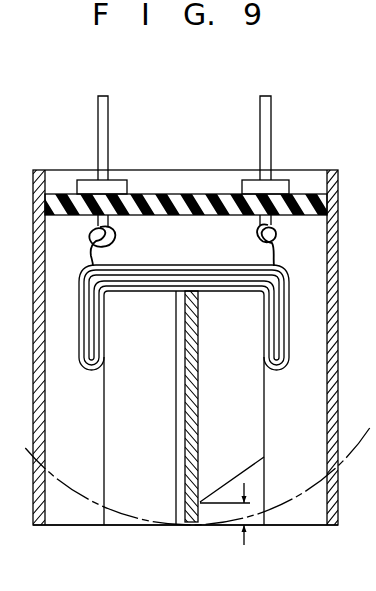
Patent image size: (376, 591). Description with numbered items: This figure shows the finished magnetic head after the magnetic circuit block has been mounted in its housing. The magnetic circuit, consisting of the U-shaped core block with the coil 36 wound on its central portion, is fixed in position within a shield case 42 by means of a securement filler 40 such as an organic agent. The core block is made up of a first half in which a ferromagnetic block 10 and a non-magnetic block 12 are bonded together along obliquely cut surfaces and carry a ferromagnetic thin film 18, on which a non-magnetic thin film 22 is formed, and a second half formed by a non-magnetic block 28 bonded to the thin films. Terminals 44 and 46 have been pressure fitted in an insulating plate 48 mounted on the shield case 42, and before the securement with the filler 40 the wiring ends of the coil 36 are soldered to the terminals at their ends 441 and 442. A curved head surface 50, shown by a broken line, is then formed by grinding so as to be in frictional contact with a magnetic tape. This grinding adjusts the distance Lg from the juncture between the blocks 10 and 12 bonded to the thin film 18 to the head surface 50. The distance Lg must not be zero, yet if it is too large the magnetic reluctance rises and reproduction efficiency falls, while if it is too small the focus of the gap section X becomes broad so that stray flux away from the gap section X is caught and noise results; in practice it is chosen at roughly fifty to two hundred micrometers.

The ferromagnetic block 10 is at (257, 422).
The non-magnetic block 12 is at (260, 468).
The ferromagnetic thin film 18 is at (193, 357).
The non-magnetic thin film 22 is at (179, 397).
The non-magnetic block 28 is at (112, 442).
The coil 36 is at (166, 278).
The securement filler 40 is at (333, 379).
The shield case 42 is at (333, 318).
The terminal 44 is at (103, 122).
The end of terminal 441 is at (97, 238).
The end of terminal 442 is at (280, 233).
The terminal 46 is at (267, 108).
The insulating plate 48 is at (175, 196).
The head surface 50 is at (143, 521).
The gap section X is at (190, 527).
The distance Lg is at (246, 517).